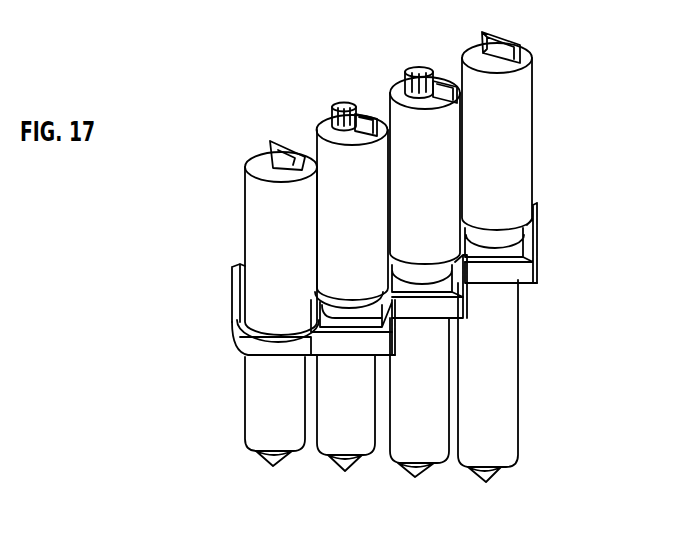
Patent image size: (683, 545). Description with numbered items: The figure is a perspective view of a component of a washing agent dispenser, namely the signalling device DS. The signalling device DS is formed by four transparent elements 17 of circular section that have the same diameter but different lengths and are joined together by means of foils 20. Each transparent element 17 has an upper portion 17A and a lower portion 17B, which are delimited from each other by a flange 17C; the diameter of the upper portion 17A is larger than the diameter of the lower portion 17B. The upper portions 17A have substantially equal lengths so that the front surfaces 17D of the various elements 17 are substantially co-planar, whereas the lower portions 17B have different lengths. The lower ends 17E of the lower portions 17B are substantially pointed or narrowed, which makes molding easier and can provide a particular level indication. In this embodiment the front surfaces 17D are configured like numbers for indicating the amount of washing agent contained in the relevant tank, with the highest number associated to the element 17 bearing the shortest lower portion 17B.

The signalling device DS is at (180, 69).
The transparent element 17 is at (545, 119).
The upper portion 17A is at (517, 168).
The lower portion 17B is at (503, 412).
The flange 17C is at (537, 207).
The front surface 17D is at (483, 36).
The lower end 17E is at (486, 483).
The foil 20 is at (354, 350).